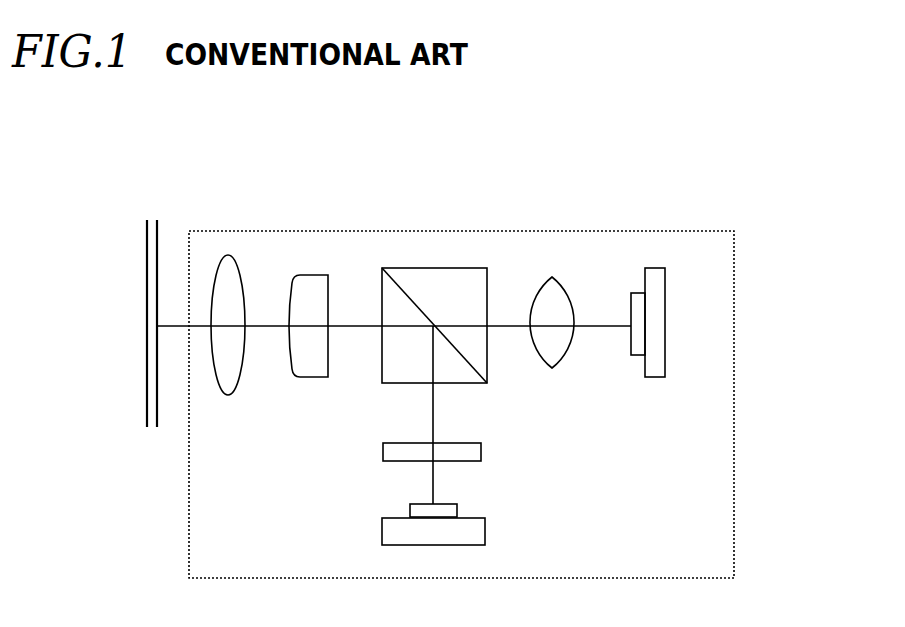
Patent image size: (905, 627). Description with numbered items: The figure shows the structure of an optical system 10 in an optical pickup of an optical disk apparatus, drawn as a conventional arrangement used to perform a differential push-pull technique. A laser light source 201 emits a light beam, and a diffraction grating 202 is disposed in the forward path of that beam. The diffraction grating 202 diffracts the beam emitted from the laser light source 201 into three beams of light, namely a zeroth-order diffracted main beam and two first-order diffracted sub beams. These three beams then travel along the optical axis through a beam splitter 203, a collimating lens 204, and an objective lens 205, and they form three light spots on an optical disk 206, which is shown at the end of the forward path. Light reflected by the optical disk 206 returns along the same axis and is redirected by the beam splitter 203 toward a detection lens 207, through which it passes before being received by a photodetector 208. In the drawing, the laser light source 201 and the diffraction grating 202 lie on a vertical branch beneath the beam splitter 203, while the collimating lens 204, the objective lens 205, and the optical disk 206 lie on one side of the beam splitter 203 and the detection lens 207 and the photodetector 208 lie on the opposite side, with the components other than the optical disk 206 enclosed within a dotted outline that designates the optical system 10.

The optical system 10 is at (766, 311).
The laser light source 201 is at (475, 530).
The diffraction grating 202 is at (472, 455).
The beam splitter 203 is at (450, 283).
The collimating lens 204 is at (310, 290).
The objective lens 205 is at (227, 270).
The optical disk 206 is at (143, 257).
The detection lens 207 is at (548, 293).
The photodetector 208 is at (660, 277).